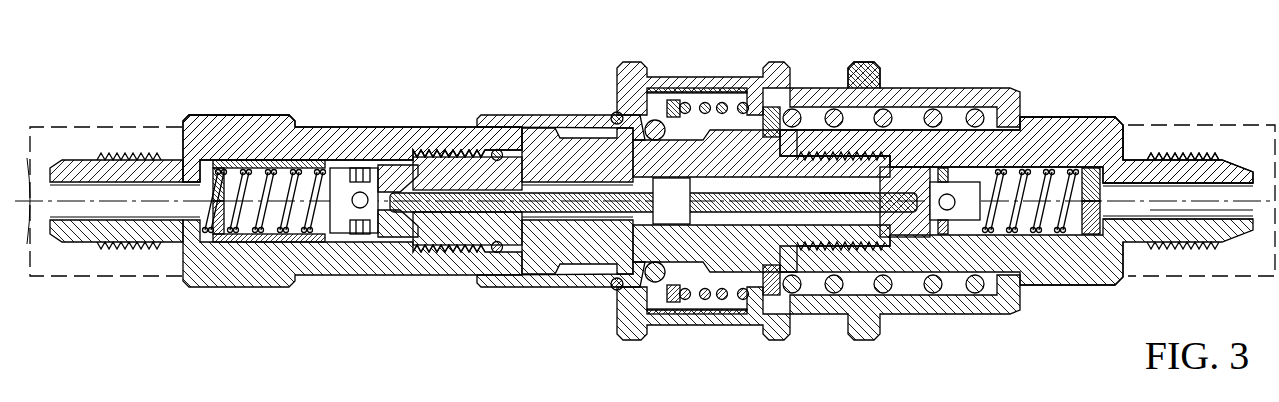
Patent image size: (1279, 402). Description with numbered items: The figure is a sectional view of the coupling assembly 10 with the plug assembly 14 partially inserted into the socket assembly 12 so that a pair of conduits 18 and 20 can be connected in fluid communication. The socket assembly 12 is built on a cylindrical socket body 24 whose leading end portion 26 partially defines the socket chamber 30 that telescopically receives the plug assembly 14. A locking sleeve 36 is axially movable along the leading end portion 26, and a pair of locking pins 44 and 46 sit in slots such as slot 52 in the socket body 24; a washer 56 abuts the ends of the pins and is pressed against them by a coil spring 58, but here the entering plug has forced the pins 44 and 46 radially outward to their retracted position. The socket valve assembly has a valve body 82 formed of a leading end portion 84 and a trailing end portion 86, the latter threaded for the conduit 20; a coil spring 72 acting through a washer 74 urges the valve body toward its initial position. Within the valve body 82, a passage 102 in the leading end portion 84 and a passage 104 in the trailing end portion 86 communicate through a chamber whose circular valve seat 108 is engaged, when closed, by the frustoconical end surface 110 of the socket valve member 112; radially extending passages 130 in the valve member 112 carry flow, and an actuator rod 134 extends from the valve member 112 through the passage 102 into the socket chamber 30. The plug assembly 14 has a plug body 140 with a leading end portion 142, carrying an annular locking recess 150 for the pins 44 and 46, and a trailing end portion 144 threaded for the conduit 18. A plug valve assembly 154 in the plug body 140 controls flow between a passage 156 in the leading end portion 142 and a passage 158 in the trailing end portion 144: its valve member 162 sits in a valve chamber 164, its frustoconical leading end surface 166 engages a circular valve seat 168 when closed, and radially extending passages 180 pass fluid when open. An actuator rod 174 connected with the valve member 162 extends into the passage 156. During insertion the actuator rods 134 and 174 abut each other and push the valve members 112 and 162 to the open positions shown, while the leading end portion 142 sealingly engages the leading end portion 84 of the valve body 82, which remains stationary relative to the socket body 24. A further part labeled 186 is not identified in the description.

The coupling assembly 10 is at (489, 45).
The socket assembly 12 is at (1021, 73).
The plug assembly 14 is at (335, 96).
The conduit 18 is at (57, 138).
The conduit 20 is at (1220, 128).
The socket body 24 is at (953, 86).
The leading end portion 26 is at (546, 114).
The socket chamber 30 is at (583, 268).
The locking sleeve 36 is at (728, 76).
The locking element 44 is at (655, 278).
The locking element 46 is at (653, 120).
The slot 52 is at (645, 301).
The washer 56 is at (672, 300).
The coil spring 58 is at (745, 106).
The coil spring 72 is at (789, 108).
The washer 74 is at (775, 284).
The valve body 82 is at (1126, 110).
The leading end portion 84 is at (800, 272).
The trailing end portion 86 is at (1077, 264).
The passage 102 is at (728, 224).
The passage 104 is at (1193, 208).
The valve seat 108 is at (888, 240).
The frustoconical end surface 110 is at (944, 222).
The socket valve member 112 is at (1048, 147).
The radially extending passages 130 is at (951, 208).
The actuator rod 134 is at (838, 192).
The plug body 140 is at (240, 291).
The leading end portion 142 is at (562, 122).
The trailing end portion 144 is at (238, 112).
The annular locking recess 150 is at (612, 290).
The plug valve assembly 154 is at (411, 151).
The passage 156 is at (518, 234).
The passage 158 is at (80, 220).
The valve member 162 is at (265, 150).
The valve chamber 164 is at (358, 234).
The frustoconical leading end surface 166 is at (410, 258).
The valve seat 168 is at (430, 236).
The actuator rod 174 is at (517, 192).
The radially extending circular passages 180 is at (364, 192).
The flange 186 is at (880, 67).